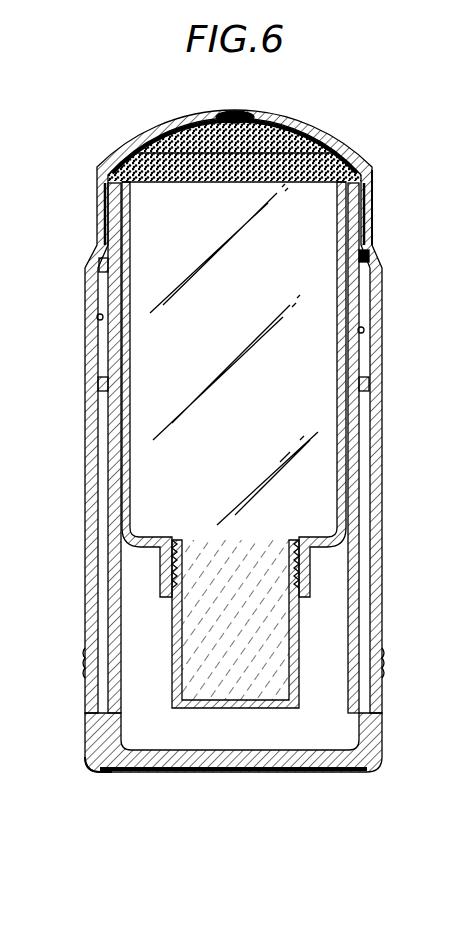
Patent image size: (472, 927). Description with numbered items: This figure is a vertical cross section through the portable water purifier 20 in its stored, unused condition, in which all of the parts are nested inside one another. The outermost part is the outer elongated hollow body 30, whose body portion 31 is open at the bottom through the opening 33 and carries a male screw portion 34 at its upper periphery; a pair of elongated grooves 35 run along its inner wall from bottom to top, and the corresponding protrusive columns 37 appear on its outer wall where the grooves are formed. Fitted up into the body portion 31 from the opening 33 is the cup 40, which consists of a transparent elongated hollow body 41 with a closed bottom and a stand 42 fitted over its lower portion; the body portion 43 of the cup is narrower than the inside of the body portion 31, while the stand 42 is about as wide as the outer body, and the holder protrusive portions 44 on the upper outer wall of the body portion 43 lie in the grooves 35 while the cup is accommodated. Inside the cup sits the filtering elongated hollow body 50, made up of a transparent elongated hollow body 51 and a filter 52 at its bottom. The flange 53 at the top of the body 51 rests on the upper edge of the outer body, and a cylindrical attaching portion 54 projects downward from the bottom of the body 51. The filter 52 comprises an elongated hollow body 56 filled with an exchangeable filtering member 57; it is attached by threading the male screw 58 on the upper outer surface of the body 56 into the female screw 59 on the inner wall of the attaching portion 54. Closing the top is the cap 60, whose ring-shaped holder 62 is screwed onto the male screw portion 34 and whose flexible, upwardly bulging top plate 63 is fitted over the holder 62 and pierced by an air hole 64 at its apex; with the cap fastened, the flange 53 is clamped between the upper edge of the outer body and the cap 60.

The portable water purifier 20 is at (295, 88).
The outer elongated hollow body 30 is at (78, 434).
The body portion 31 is at (379, 430).
The opening 33 is at (103, 697).
The male screw portion 34 is at (372, 210).
The elongated grooves 35 is at (97, 317).
The protrusive columns 37 is at (92, 290).
The cup 40 is at (341, 785).
The transparent elongated hollow body 41 is at (110, 527).
The stand 42 is at (106, 762).
The body portion 43 is at (360, 500).
The holder protrusive portions 44 is at (112, 392).
The filtering elongated hollow body 50 is at (360, 283).
The transparent elongated hollow body 51 is at (118, 273).
The filter 52 is at (158, 660).
The flange 53 is at (100, 188).
The cylindrical attaching portion 54 is at (304, 562).
The elongated hollow body 56 is at (177, 622).
The filtering member 57 is at (238, 692).
The male screw 58 is at (307, 572).
The female screw 59 is at (190, 540).
The cap 60 is at (101, 146).
The ring-shaped holder 62 is at (371, 177).
The top plate 63 is at (146, 122).
The air hole 64 is at (233, 114).